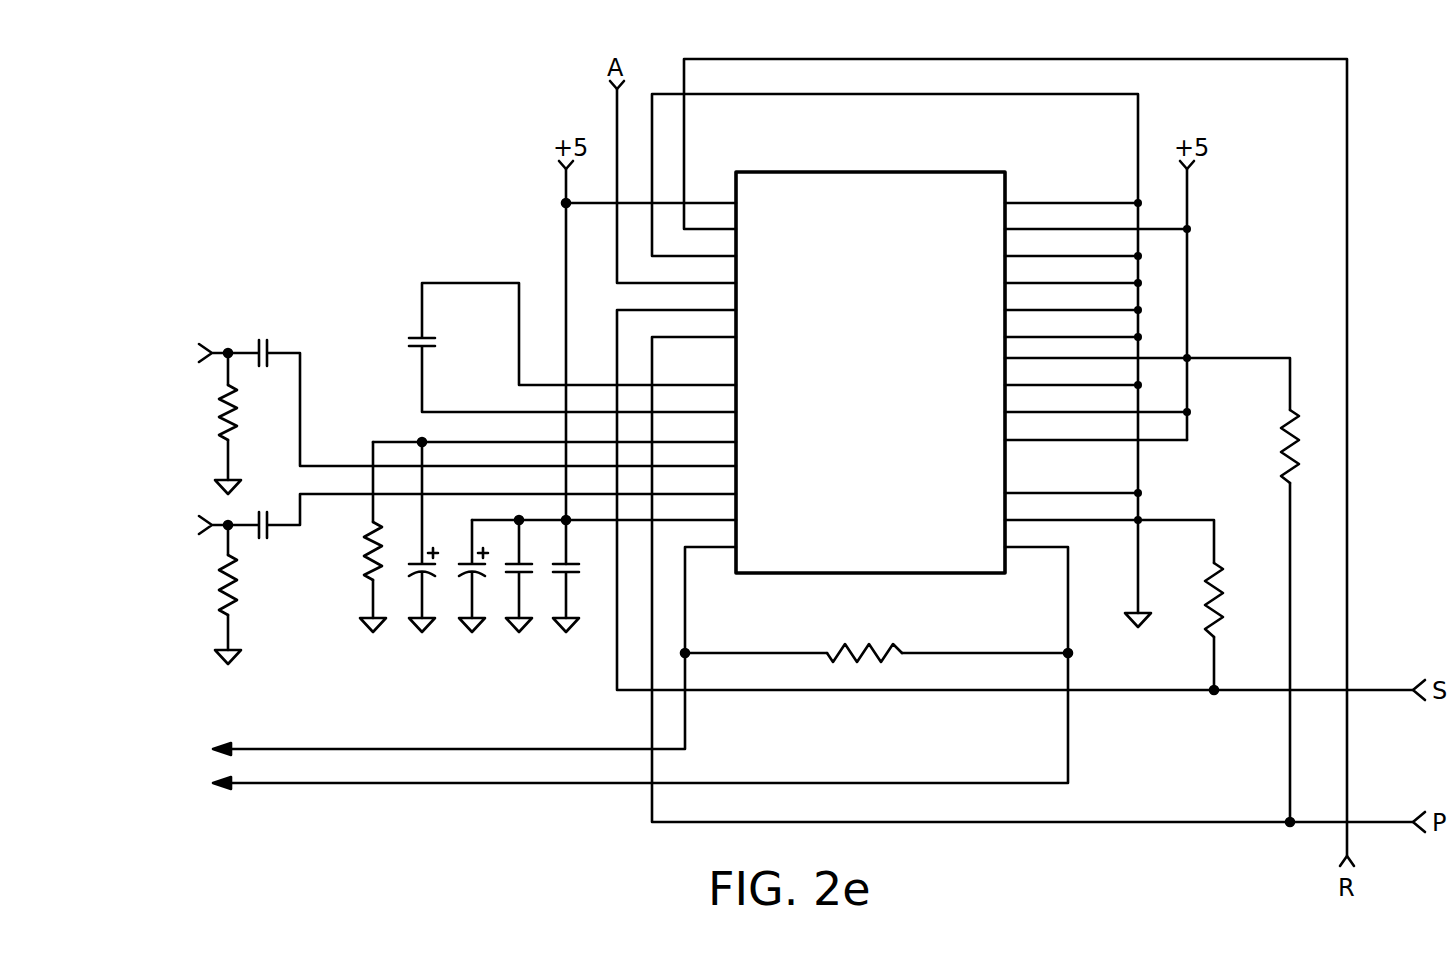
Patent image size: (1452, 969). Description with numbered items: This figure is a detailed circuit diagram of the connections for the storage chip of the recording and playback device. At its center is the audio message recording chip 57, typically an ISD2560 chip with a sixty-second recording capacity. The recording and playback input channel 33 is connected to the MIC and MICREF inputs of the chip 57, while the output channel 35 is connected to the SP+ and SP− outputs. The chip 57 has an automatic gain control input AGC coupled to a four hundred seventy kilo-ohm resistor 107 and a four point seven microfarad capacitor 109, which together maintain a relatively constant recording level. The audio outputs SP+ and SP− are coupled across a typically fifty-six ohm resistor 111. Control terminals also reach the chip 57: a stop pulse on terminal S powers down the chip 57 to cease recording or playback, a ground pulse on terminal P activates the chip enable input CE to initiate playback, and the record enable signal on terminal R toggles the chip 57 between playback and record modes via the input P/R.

The recording and playback input channel 33 is at (178, 325).
The output channel 35 is at (203, 728).
The message storage chip 57 is at (875, 171).
The resistor 107 is at (360, 563).
The capacitor 109 is at (416, 574).
The resistor 111 is at (866, 640).